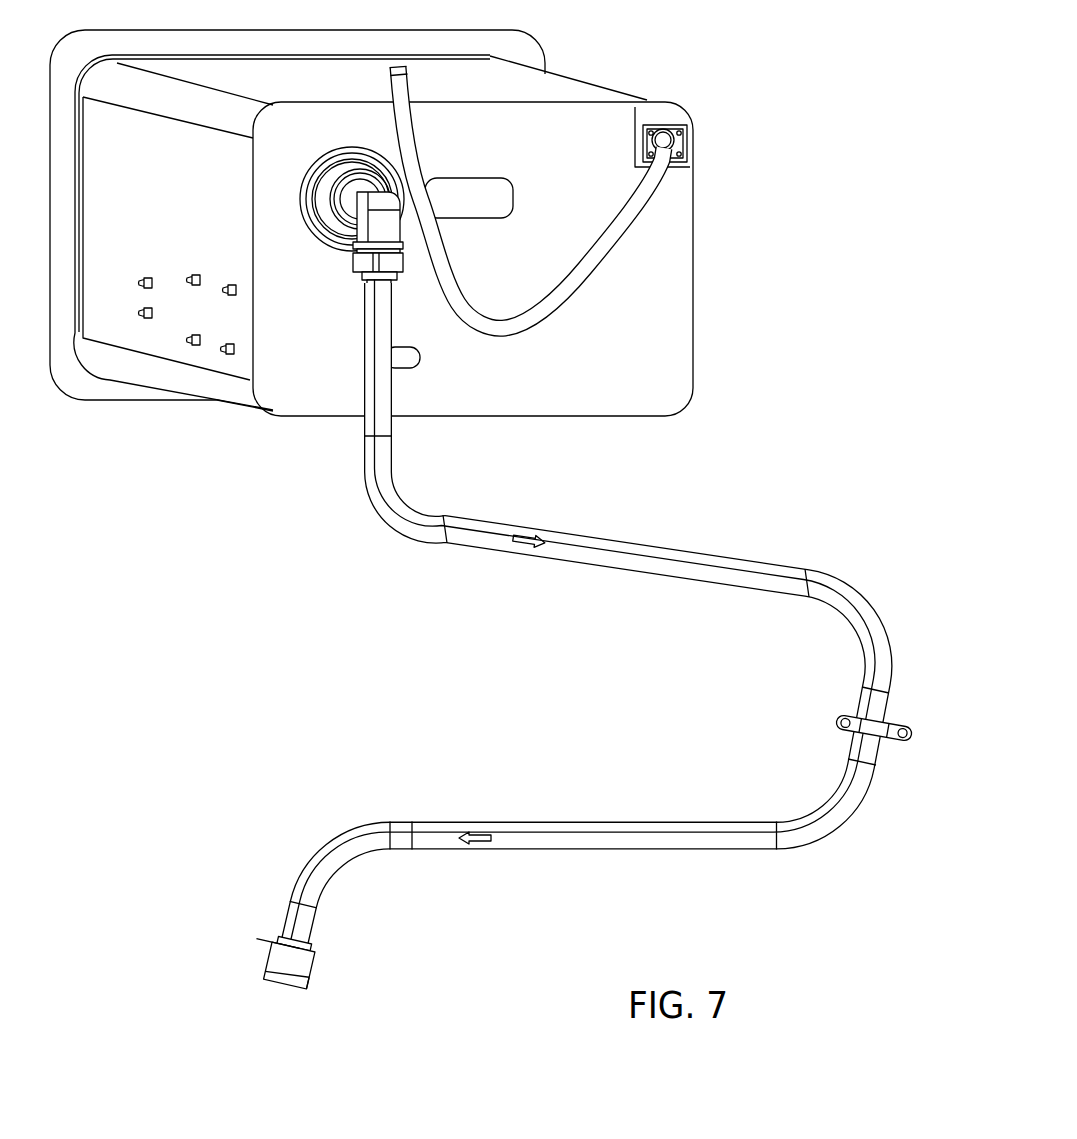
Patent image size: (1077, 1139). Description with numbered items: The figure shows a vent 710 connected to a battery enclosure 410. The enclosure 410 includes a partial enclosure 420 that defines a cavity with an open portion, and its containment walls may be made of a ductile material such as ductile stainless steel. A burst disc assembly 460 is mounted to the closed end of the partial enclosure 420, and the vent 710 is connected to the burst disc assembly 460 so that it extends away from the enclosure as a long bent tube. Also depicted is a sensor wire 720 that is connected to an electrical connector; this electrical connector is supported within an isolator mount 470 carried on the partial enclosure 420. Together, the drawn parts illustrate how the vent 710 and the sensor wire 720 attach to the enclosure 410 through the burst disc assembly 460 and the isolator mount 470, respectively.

The enclosure 410 is at (577, 63).
The partial enclosure 420 is at (692, 326).
The burst disc assembly 460 is at (303, 180).
The isolator mount 470 is at (668, 137).
The vent 710 is at (636, 543).
The sensor wire 720 is at (545, 314).